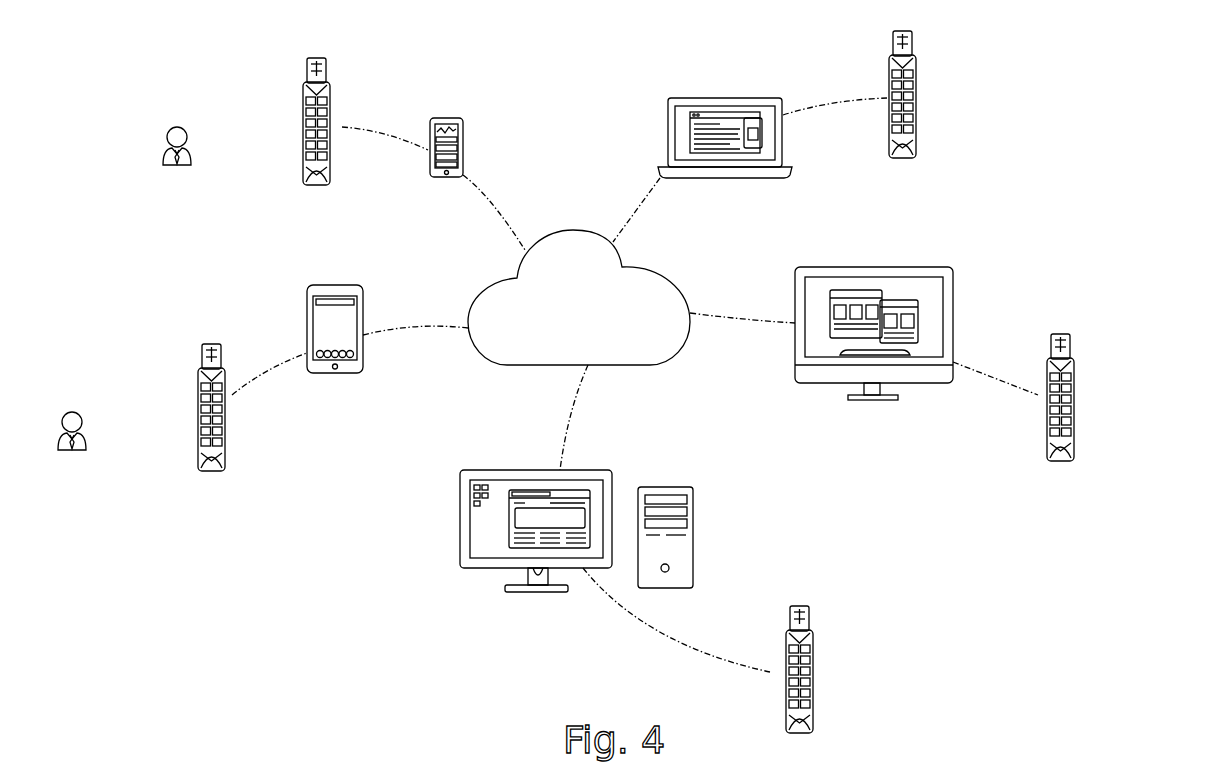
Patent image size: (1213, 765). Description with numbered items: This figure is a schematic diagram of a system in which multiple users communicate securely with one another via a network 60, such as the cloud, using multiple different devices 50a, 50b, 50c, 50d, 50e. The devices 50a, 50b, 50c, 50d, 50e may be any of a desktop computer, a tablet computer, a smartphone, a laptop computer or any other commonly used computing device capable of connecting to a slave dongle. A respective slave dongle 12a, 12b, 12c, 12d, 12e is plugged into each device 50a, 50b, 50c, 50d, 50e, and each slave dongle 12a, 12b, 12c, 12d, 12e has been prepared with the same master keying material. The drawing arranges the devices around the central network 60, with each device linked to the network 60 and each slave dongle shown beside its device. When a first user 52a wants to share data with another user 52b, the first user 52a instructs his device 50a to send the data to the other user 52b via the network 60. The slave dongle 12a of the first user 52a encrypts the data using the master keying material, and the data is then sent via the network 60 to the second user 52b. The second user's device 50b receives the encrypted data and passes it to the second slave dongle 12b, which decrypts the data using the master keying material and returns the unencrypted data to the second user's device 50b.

The slave dongle 12a is at (286, 127).
The slave dongle 12b is at (181, 410).
The slave dongle 12c is at (830, 678).
The slave dongle 12d is at (1092, 403).
The slave dongle 12e is at (935, 100).
The device 50a is at (446, 107).
The device 50b is at (334, 274).
The device 50c is at (483, 576).
The device 50d is at (875, 254).
The device 50e is at (724, 86).
The first user 52a is at (202, 150).
The second user 52b is at (97, 438).
The network 60 is at (579, 297).